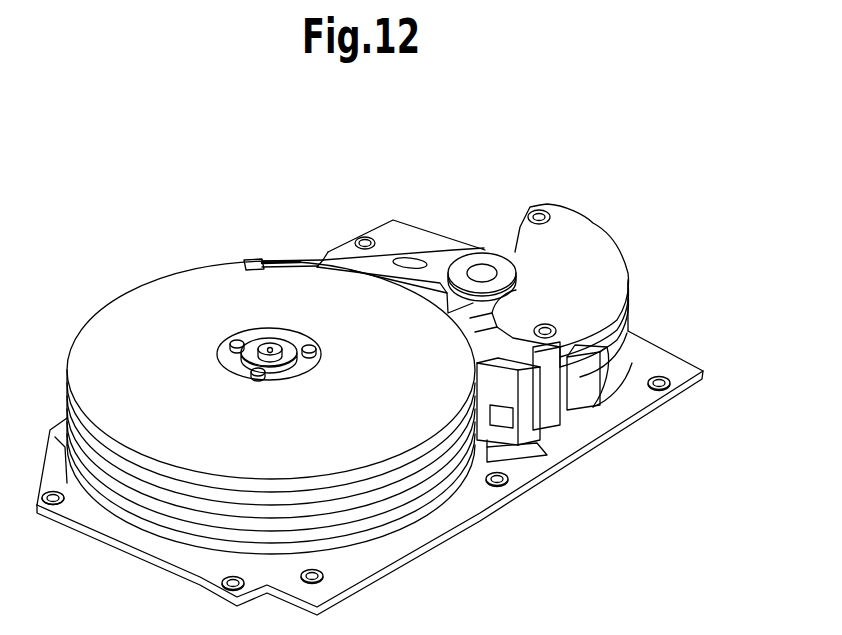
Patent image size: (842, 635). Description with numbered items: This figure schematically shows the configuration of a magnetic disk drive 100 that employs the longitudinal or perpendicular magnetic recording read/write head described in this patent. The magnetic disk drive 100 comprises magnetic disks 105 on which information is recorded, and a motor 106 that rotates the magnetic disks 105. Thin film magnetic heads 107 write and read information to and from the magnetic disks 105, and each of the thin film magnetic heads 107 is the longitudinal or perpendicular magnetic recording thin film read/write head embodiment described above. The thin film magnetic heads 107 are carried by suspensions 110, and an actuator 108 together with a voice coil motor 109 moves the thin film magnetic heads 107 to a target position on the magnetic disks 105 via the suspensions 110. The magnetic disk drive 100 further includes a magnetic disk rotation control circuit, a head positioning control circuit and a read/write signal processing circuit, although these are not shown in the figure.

The magnetic disk drive 100 is at (181, 205).
The magnetic disks 105 is at (160, 378).
The motor 106 is at (252, 350).
The thin film magnetic heads 107 is at (256, 259).
The actuator 108 is at (481, 271).
The voice coil motor 109 is at (640, 340).
The suspensions 110 is at (343, 254).